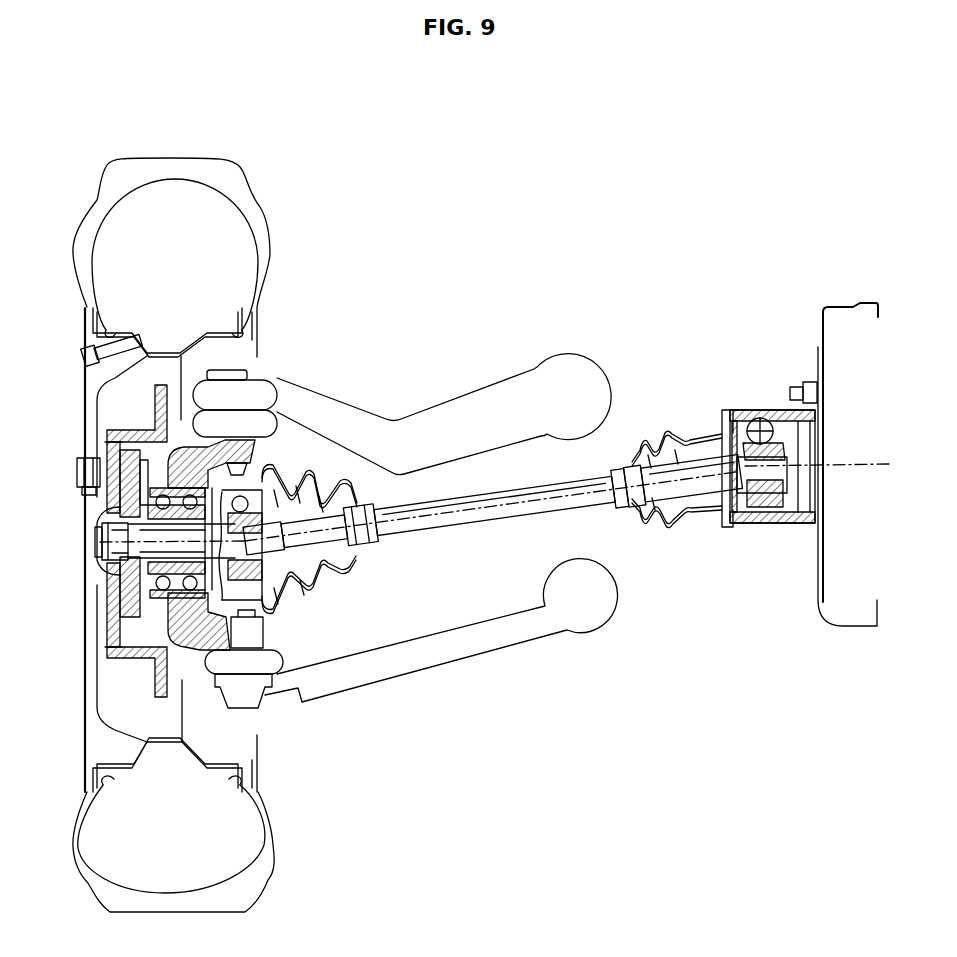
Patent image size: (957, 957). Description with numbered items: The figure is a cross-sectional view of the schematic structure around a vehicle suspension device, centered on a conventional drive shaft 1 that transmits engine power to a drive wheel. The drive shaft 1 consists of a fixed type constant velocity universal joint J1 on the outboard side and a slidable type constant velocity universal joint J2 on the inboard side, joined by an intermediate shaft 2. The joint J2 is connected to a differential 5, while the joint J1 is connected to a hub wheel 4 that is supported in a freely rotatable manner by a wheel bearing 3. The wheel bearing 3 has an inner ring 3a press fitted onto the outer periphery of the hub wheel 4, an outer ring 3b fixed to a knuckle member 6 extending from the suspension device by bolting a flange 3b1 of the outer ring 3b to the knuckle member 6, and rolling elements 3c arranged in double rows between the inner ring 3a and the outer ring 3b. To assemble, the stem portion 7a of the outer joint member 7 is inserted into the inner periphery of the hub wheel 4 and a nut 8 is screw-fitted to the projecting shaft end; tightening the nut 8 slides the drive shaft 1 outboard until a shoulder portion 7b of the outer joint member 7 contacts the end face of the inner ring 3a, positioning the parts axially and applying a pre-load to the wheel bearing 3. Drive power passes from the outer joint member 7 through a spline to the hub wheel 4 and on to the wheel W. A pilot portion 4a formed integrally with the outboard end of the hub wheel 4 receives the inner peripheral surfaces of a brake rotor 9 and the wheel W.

The drive shaft 1 is at (437, 545).
The intermediate shaft 2 is at (484, 518).
The wheel bearing 3 is at (150, 624).
The inner ring 3a is at (120, 556).
The outer ring 3b is at (128, 618).
The flange 3b1 is at (108, 441).
The rolling element 3c is at (122, 592).
The hub wheel 4 is at (102, 513).
The pilot portion 4a is at (97, 493).
The differential 5 is at (853, 612).
The knuckle member 6 is at (226, 602).
The outer joint member 7 is at (258, 600).
The stem portion 7a is at (108, 528).
The shoulder portion 7b is at (214, 530).
The nut 8 is at (108, 546).
The brake rotor 9 is at (150, 408).
The wheel W is at (85, 412).
The fixed type constant velocity universal joint J1 is at (214, 530).
The slidable type constant velocity universal joint J2 is at (778, 538).